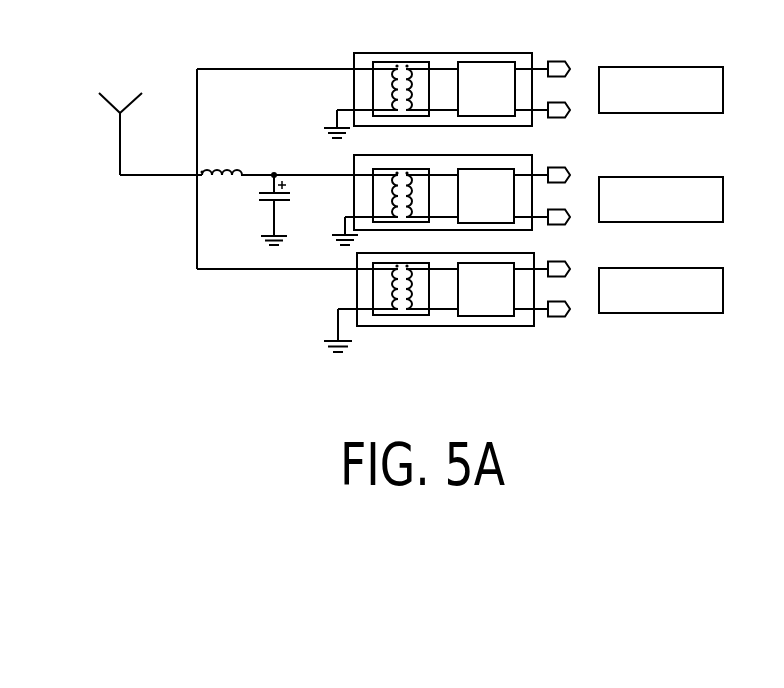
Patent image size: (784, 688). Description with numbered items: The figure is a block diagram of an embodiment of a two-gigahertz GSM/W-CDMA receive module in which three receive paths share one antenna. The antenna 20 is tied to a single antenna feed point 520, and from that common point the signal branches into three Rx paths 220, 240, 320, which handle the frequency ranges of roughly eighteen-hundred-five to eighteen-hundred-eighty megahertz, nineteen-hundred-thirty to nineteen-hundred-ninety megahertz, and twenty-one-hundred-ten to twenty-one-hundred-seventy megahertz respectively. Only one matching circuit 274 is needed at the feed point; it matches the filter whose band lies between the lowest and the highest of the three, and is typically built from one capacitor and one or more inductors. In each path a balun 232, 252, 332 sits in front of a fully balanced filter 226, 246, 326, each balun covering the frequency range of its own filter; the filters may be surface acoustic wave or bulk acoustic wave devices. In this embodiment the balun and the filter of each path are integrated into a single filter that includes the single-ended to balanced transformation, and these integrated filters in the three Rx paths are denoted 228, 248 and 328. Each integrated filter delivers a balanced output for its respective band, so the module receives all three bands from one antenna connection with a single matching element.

The antenna 20 is at (118, 147).
The antenna feed point 520 is at (197, 178).
The matching circuit 274 is at (250, 188).
The filter with single to balanced transformation 228 is at (472, 53).
The balun 232 is at (392, 62).
The filter 226 is at (503, 98).
The Rx path 220 is at (580, 68).
The filter with single to balanced transformation 248 is at (467, 155).
The balun 252 is at (385, 169).
The filter 246 is at (503, 207).
The Rx path 240 is at (580, 178).
The filter with single to balanced transformation 328 is at (437, 326).
The balun 332 is at (377, 288).
The filter 326 is at (503, 301).
The Rx path 320 is at (580, 270).